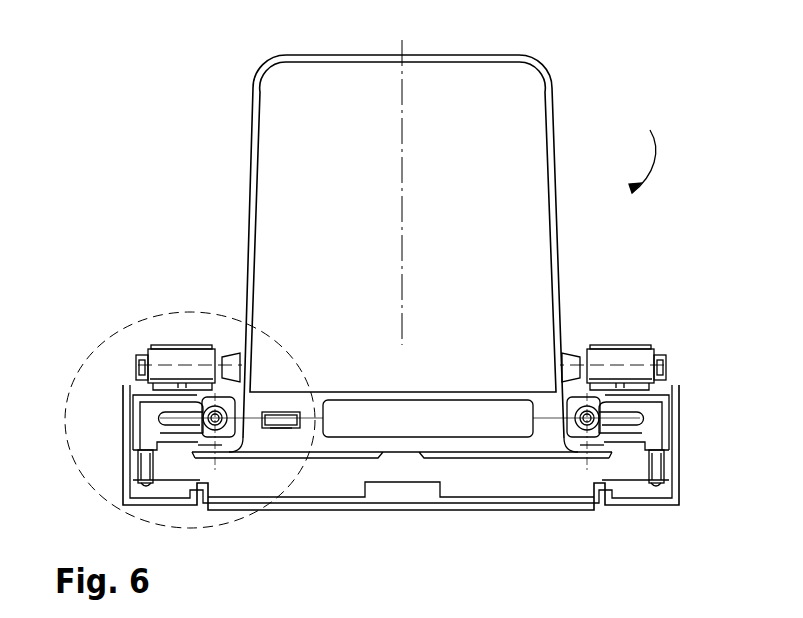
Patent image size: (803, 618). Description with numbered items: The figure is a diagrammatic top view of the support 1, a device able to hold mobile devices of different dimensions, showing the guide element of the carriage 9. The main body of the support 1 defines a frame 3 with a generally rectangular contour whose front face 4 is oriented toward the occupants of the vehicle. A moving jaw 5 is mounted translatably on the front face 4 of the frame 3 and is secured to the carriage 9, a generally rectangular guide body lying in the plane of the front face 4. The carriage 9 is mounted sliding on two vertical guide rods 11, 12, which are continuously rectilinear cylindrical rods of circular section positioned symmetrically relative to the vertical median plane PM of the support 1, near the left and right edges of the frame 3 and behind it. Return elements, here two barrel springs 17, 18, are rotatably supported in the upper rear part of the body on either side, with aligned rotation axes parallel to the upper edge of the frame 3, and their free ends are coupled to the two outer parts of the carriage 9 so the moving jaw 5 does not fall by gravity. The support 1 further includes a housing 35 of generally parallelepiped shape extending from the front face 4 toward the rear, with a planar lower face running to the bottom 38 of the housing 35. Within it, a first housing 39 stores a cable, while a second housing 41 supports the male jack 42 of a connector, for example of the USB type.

The support 1 is at (643, 150).
The frame 3 is at (630, 511).
The front face 4 is at (395, 459).
The moving jaw 5 is at (492, 483).
The carriage 9 is at (136, 431).
The guide rod 11 is at (216, 425).
The guide rod 12 is at (585, 428).
The barrel spring 17 is at (165, 346).
The barrel spring 18 is at (623, 346).
The housing 35 is at (403, 227).
The bottom of the housing 38 is at (485, 55).
The first housing 39 is at (430, 420).
The second housing 41 is at (287, 411).
The male jack 42 is at (278, 429).
The vertical median plane PM is at (402, 180).